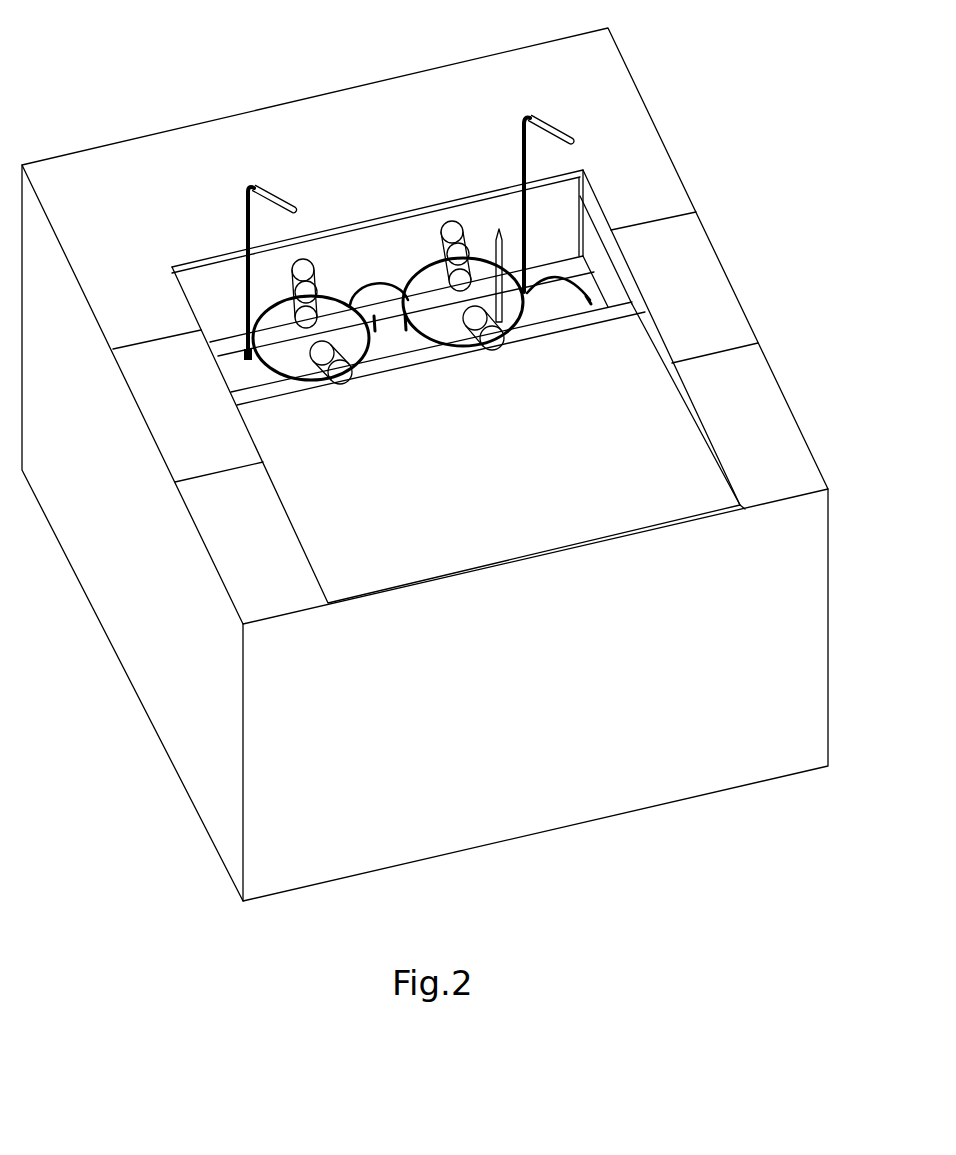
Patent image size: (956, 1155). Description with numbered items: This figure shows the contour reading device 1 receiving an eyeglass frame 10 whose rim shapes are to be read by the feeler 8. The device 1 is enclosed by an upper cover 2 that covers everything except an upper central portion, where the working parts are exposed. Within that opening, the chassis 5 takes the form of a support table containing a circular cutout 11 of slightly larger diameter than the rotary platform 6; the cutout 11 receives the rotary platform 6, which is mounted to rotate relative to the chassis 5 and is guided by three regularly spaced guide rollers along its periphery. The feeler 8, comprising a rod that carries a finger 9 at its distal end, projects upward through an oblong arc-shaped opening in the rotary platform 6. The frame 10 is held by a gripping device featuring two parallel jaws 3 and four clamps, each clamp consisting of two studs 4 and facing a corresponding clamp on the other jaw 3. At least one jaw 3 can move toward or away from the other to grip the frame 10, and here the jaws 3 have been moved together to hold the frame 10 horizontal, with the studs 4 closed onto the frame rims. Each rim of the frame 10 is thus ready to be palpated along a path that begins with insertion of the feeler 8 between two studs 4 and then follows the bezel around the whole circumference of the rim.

The contour reading device 1 is at (181, 96).
The upper cover 2 is at (765, 403).
The jaws 3 is at (207, 285).
The studs 4 is at (302, 277).
The chassis 5 is at (568, 293).
The rotary platform 6 is at (255, 375).
The feeler 8 is at (510, 340).
The finger 9 is at (497, 233).
The frame 10 is at (282, 194).
The circular cutout 11 is at (232, 367).